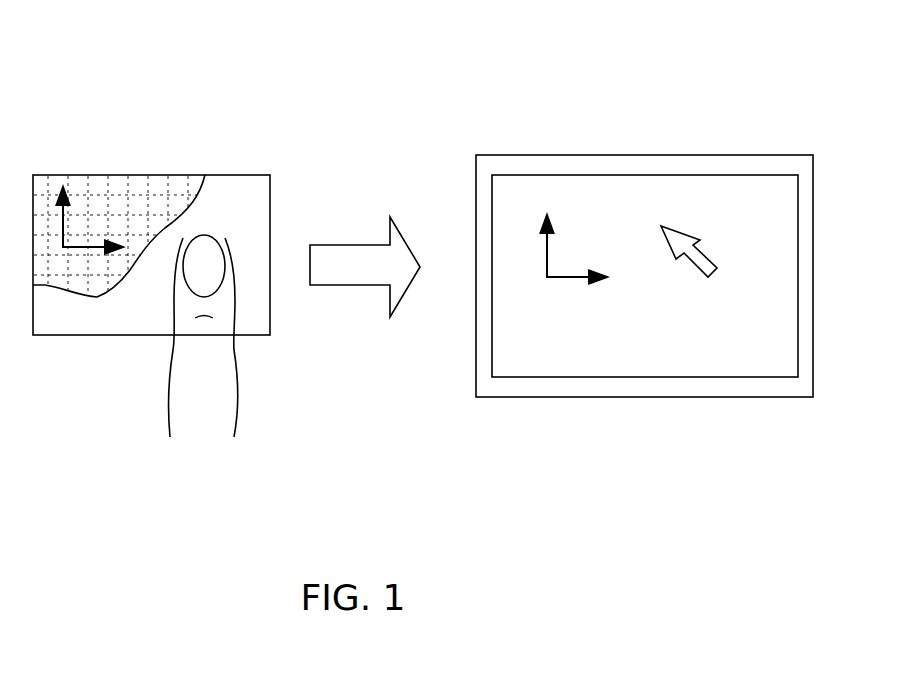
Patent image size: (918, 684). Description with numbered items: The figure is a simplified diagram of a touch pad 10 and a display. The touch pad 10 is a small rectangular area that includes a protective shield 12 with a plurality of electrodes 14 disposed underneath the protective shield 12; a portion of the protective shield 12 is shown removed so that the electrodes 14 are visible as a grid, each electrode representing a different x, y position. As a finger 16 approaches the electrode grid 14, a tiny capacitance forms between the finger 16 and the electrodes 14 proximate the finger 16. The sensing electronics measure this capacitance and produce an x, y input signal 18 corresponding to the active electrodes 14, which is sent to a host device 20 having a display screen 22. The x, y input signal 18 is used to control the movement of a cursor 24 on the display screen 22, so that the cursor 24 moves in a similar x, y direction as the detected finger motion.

The touch pad 10 is at (227, 113).
The protective shield 12 is at (243, 203).
The electrodes 14 is at (97, 183).
The finger 16 is at (223, 385).
The x, y input signal 18 is at (365, 255).
The host device 20 is at (547, 102).
The display screen 22 is at (627, 205).
The cursor 24 is at (710, 255).